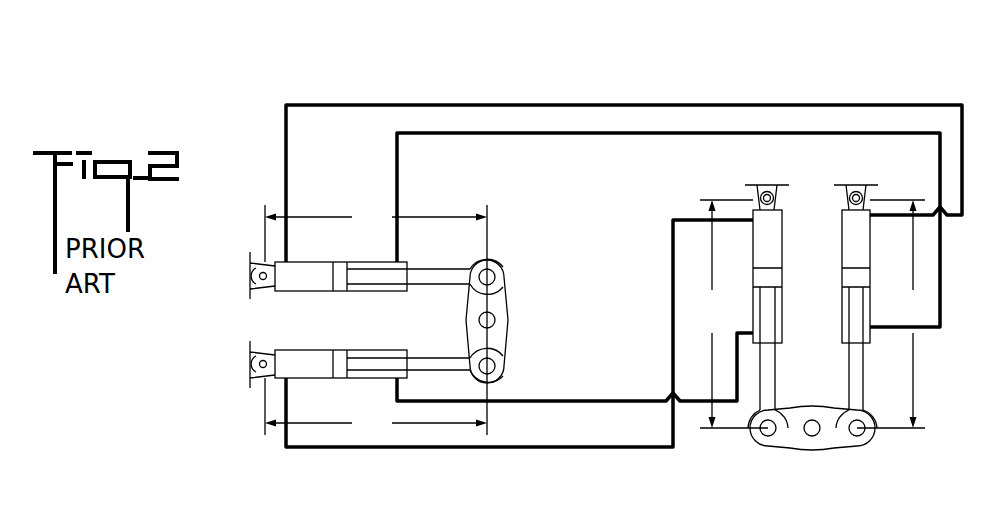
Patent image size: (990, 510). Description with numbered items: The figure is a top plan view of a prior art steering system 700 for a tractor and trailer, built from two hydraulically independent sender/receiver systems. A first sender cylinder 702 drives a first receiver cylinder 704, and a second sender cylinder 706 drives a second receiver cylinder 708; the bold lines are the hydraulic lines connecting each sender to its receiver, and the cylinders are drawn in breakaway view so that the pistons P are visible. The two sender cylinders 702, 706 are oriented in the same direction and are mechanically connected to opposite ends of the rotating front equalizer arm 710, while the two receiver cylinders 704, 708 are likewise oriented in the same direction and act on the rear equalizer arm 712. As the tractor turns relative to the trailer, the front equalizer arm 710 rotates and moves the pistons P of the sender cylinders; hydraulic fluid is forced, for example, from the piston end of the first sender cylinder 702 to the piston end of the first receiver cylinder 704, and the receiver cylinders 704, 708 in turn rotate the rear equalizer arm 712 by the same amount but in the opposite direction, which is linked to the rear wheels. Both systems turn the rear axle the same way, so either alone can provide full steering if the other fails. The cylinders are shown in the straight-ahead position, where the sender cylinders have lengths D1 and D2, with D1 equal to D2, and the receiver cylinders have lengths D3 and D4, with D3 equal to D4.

The steering system 700 is at (896, 81).
The first sender cylinder 702 is at (337, 295).
The first receiver cylinder 704 is at (838, 235).
The second sender cylinder 706 is at (367, 338).
The second receiver cylinder 708 is at (791, 278).
The front equalizer arm 710 is at (509, 336).
The rear equalizer arm 712 is at (823, 405).
The piston P is at (344, 270).
The length of first sender cylinder D1 is at (376, 320).
The length of second sender cylinder D2 is at (376, 406).
The length of first receiver cylinder D3 is at (891, 314).
The length of second receiver cylinder D4 is at (734, 314).